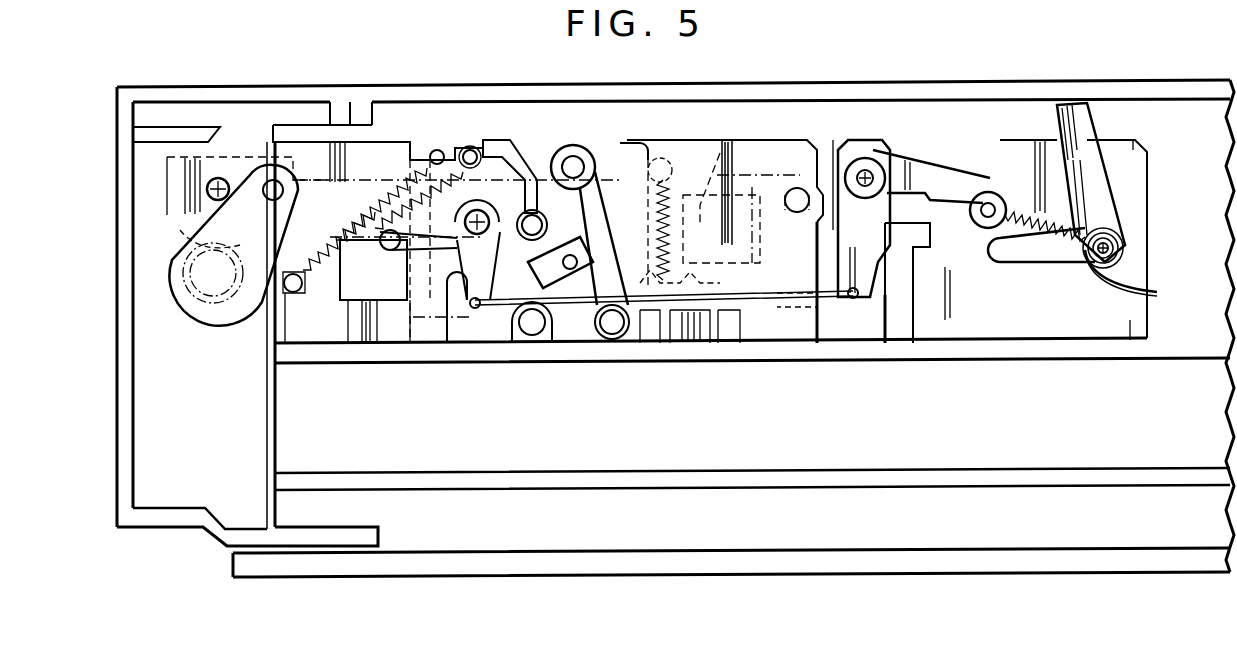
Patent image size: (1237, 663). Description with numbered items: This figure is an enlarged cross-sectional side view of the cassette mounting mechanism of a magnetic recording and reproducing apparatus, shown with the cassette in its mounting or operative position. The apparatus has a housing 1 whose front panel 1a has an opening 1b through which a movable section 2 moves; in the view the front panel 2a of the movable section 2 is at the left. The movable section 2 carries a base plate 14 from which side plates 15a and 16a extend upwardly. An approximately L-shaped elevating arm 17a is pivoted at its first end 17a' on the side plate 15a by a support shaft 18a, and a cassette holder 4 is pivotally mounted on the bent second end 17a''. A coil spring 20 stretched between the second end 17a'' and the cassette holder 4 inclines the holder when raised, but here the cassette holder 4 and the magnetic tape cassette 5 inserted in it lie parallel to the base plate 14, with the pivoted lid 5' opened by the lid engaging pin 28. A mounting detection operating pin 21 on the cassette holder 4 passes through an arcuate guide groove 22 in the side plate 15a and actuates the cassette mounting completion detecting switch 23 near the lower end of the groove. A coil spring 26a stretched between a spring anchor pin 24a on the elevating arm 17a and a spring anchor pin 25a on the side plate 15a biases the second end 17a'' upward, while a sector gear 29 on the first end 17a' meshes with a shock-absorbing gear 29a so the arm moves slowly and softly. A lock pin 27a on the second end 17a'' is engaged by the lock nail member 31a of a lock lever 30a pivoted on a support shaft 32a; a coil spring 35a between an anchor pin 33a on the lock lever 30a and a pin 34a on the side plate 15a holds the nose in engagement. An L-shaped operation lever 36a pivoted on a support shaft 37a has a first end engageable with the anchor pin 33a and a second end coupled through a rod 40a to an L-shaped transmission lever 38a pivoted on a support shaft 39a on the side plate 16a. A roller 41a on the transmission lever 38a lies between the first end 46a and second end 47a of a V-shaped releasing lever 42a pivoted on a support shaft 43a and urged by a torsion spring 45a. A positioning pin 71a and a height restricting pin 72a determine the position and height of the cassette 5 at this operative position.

The housing 1 is at (490, 82).
The front panel 1a is at (117, 120).
The opening 1b is at (365, 108).
The movable section 2 is at (79, 273).
The front panel 2a is at (117, 209).
The cassette holder 4 is at (668, 165).
The magnetic tape cassette 5 is at (725, 185).
The pivoted lid 5' is at (746, 192).
The base plate 14 is at (882, 360).
The side plate 15a is at (820, 325).
The side plate 16a is at (912, 330).
The elevating arm 17a is at (378, 144).
The first end 17a' is at (132, 186).
The second end 17a'' is at (690, 356).
The support shaft 18a is at (222, 178).
The coil spring 20 is at (722, 185).
The mounting detection operating pin 21 is at (613, 340).
The guide groove 22 is at (632, 150).
The cassette mounting completion detecting switch 23 is at (560, 290).
The spring anchor pin 24a is at (294, 293).
The spring anchor pin 25a is at (437, 150).
The coil spring 26a is at (340, 246).
The lock pin 27a is at (590, 168).
The lid engaging pin 28 is at (794, 212).
The sector gear 29 is at (172, 228).
The shock-absorbing gear 29a is at (210, 303).
The lock lever 30a is at (395, 330).
The lock nail member 31a is at (536, 212).
The support shaft 32a is at (532, 338).
The anchor pin 33a is at (387, 250).
The pin 34a is at (500, 167).
The coil spring 35a is at (473, 150).
The operation lever 36a is at (455, 330).
The support shaft 37a is at (490, 292).
The transmission lever 38a is at (915, 165).
The support shaft 39a is at (865, 158).
The rod 40a is at (782, 300).
The roller 41a is at (995, 190).
The releasing lever 42a is at (1148, 196).
The support shaft 43a is at (1095, 263).
The torsion spring 45a is at (1150, 283).
The first end 46a is at (1095, 114).
The second end 47a is at (997, 264).
The positioning pin 71a is at (702, 283).
The height restricting pin 72a is at (352, 330).